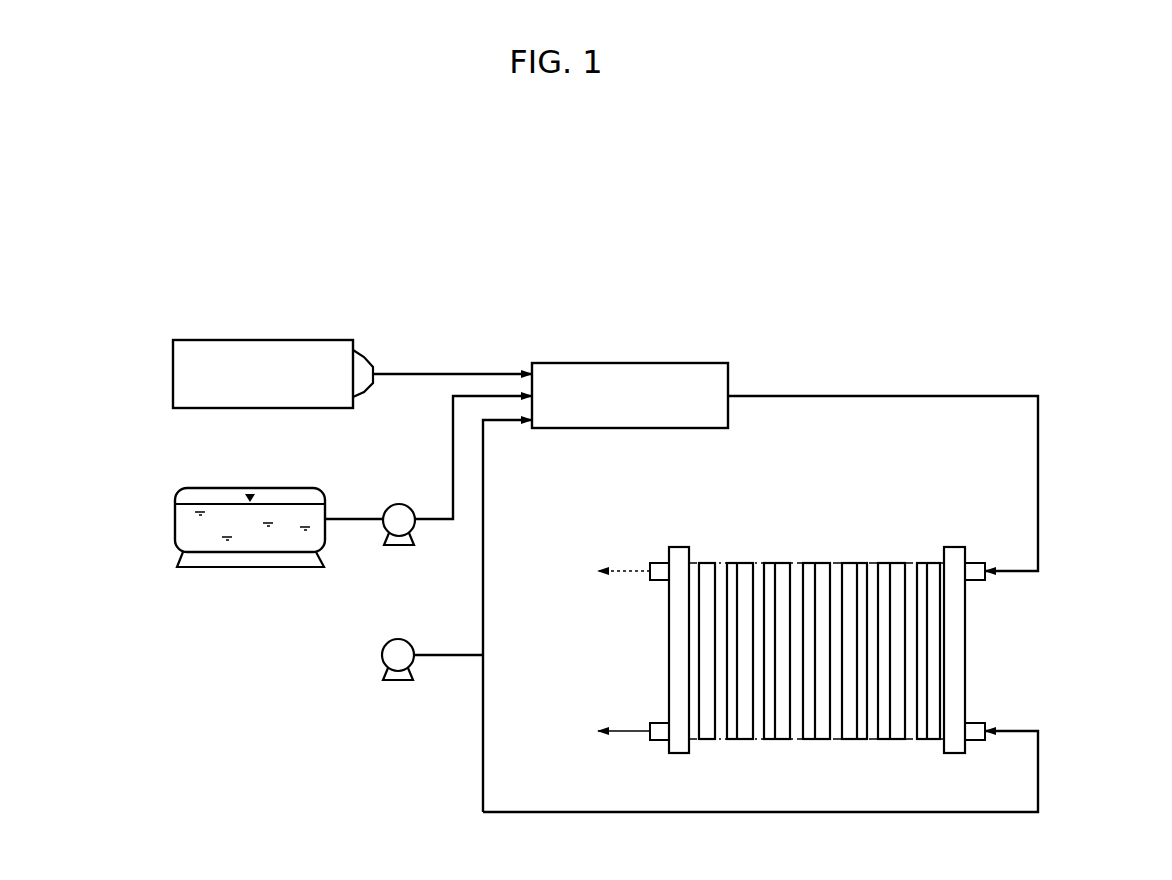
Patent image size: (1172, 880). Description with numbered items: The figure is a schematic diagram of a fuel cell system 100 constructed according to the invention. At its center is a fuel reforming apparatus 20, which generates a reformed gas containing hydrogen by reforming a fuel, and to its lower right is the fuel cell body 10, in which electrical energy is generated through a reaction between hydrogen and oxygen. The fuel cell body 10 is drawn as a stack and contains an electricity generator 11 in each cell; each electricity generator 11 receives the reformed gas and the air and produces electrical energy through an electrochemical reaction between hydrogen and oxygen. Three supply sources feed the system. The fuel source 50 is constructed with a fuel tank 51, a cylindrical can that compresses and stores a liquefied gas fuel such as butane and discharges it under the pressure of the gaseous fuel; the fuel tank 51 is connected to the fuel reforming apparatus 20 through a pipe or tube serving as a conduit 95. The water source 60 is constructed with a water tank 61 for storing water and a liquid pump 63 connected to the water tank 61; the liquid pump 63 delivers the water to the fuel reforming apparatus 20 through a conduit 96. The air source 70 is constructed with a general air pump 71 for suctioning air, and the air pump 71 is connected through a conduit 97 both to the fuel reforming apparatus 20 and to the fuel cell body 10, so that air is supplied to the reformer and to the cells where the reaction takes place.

The fuel cell system 100 is at (552, 243).
The fuel cell body 10 is at (975, 652).
The electricity generator 11 is at (823, 733).
The fuel reforming apparatus 20 is at (631, 363).
The fuel source 50 is at (331, 315).
The fuel tank 51 is at (174, 375).
The water source 60 is at (353, 572).
The water tank 61 is at (175, 527).
The liquid pump 63 is at (398, 503).
The air source 70 is at (370, 678).
The air pump 71 is at (398, 639).
The conduit 95 is at (443, 373).
The conduit 96 is at (432, 522).
The conduit 97 is at (1038, 478).